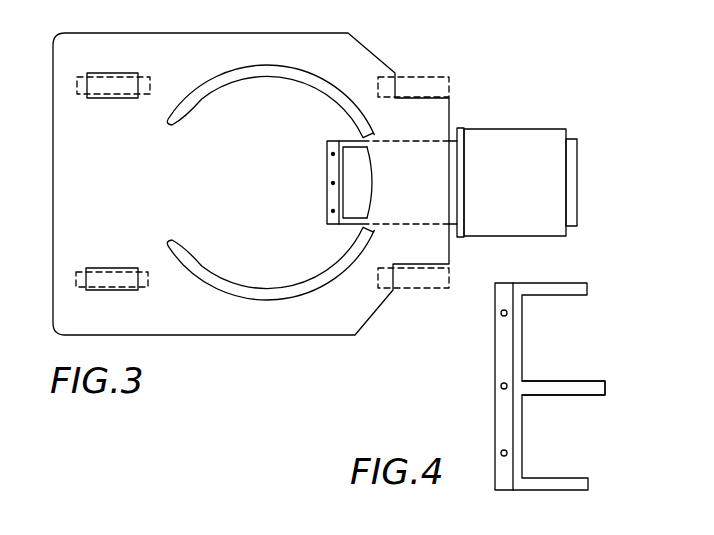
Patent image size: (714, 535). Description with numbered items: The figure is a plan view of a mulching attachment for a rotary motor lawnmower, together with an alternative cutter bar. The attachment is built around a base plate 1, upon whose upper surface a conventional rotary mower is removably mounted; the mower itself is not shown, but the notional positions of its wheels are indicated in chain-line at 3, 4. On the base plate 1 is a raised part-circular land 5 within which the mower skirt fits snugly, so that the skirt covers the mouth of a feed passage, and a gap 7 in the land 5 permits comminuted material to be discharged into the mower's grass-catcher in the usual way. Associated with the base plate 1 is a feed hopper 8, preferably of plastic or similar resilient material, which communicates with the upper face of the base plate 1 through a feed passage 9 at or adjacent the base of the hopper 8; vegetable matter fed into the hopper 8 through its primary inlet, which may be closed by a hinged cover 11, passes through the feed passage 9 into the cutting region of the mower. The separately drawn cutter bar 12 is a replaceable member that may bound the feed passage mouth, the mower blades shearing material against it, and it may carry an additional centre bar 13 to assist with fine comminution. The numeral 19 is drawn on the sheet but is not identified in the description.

In FIG. 3, the mounting plate 1 is at (67, 223).
In FIG. 3, the retaining clip 3 is at (80, 70).
In FIG. 3, the retaining clip 4 is at (410, 73).
In FIG. 3, the C-shaped ring 5 is at (252, 74).
In FIG. 3, the opening in plate 7 is at (168, 182).
In FIG. 3, the connector assembly 8 is at (594, 161).
In FIG. 3, the bracket 9 is at (410, 156).
In FIG. 3, the connector body 11 is at (498, 147).
In FIG. 4, the E-shaped bracket 12 is at (582, 333).
In FIG. 4, the center flange 13 is at (593, 388).
In FIG. 3, the cable 19 is at (582, 2).